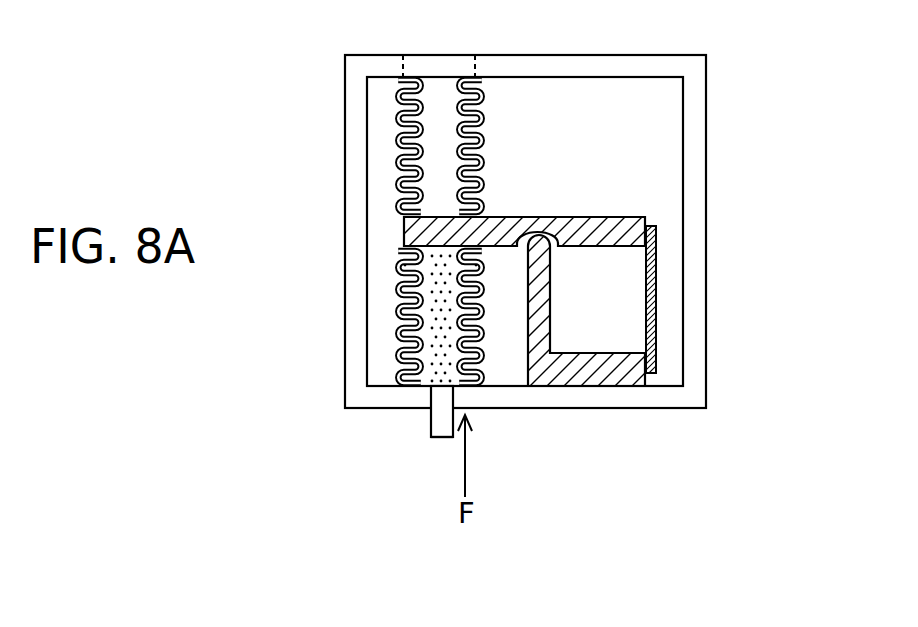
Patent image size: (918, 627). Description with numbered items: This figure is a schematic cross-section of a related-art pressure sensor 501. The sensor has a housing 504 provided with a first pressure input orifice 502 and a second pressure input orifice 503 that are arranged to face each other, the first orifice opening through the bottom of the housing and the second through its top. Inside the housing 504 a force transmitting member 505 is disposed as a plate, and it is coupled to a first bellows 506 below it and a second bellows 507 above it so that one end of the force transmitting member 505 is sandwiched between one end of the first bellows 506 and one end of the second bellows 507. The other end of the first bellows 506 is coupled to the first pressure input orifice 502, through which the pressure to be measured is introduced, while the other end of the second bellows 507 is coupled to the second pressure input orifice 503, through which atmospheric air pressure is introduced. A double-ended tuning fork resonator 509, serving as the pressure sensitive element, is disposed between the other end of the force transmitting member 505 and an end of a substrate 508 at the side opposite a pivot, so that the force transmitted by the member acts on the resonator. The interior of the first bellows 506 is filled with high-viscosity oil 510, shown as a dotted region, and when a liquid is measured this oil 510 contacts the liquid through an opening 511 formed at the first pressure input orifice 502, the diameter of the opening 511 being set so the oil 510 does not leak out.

The pressure sensor 501 is at (718, 403).
The first pressure input orifice 502 is at (431, 420).
The second pressure input orifice 503 is at (437, 65).
The housing 504 is at (623, 398).
The force transmitting member 505 is at (627, 217).
The first bellows 506 is at (400, 358).
The second bellows 507 is at (483, 100).
The substrate 508 is at (562, 375).
The double-ended tuning fork resonator 509 is at (657, 303).
The oil 510 is at (440, 316).
The opening 511 is at (440, 437).